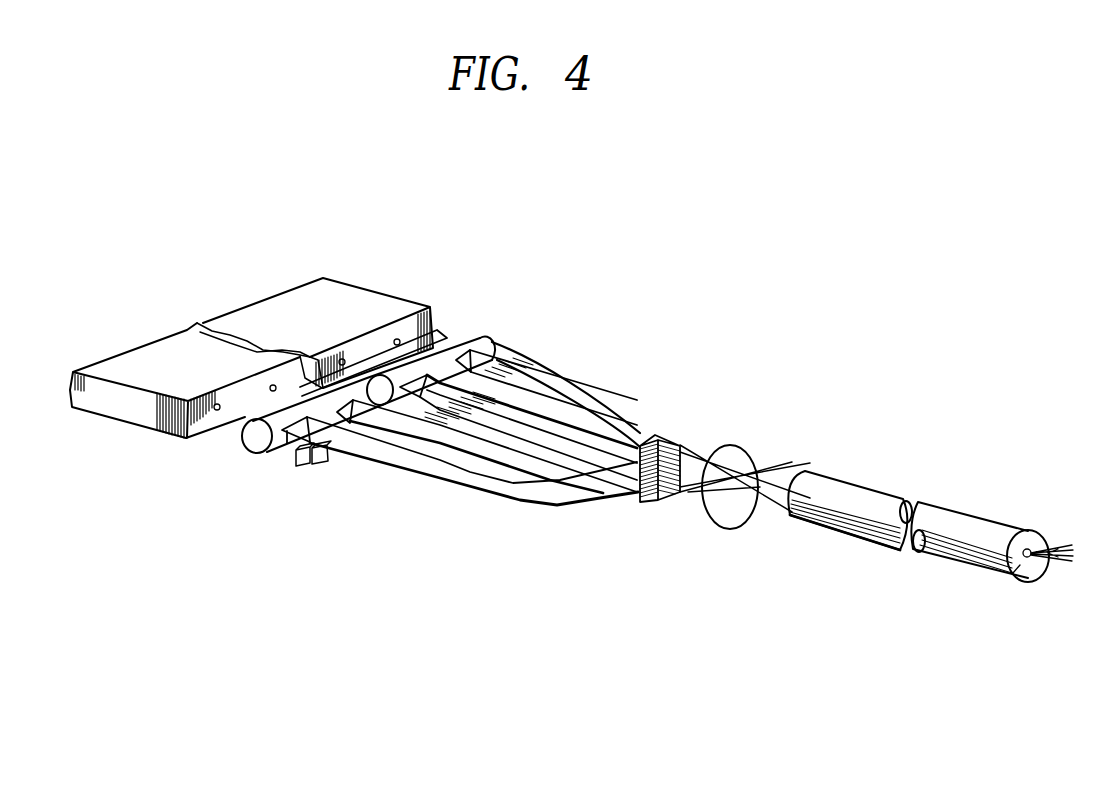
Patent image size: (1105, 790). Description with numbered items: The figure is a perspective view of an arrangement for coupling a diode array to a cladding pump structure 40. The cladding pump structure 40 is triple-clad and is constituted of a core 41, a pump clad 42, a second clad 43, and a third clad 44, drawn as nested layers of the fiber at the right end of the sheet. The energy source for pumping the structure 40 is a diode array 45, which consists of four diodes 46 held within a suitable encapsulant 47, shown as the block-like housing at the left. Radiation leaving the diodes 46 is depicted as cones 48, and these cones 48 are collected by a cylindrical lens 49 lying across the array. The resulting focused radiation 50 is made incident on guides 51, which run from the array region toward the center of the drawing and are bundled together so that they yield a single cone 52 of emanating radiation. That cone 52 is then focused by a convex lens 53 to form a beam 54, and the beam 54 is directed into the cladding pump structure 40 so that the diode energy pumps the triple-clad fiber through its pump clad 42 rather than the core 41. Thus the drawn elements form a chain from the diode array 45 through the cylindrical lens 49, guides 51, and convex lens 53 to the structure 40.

The cladding pump structure 40 is at (830, 496).
The core 41 is at (1028, 582).
The pump clad 42 is at (1027, 550).
The second clad 43 is at (1013, 573).
The third clad 44 is at (988, 567).
The diode array 45 is at (323, 278).
The diodes 46 is at (398, 339).
The encapsulant 47 is at (437, 325).
The cones 48 is at (270, 388).
The cylindrical lens 49 is at (263, 453).
The focused radiation 50 is at (497, 350).
The guides 51 is at (598, 398).
The cone 52 is at (692, 484).
The convex lens 53 is at (748, 445).
The beam 54 is at (782, 486).